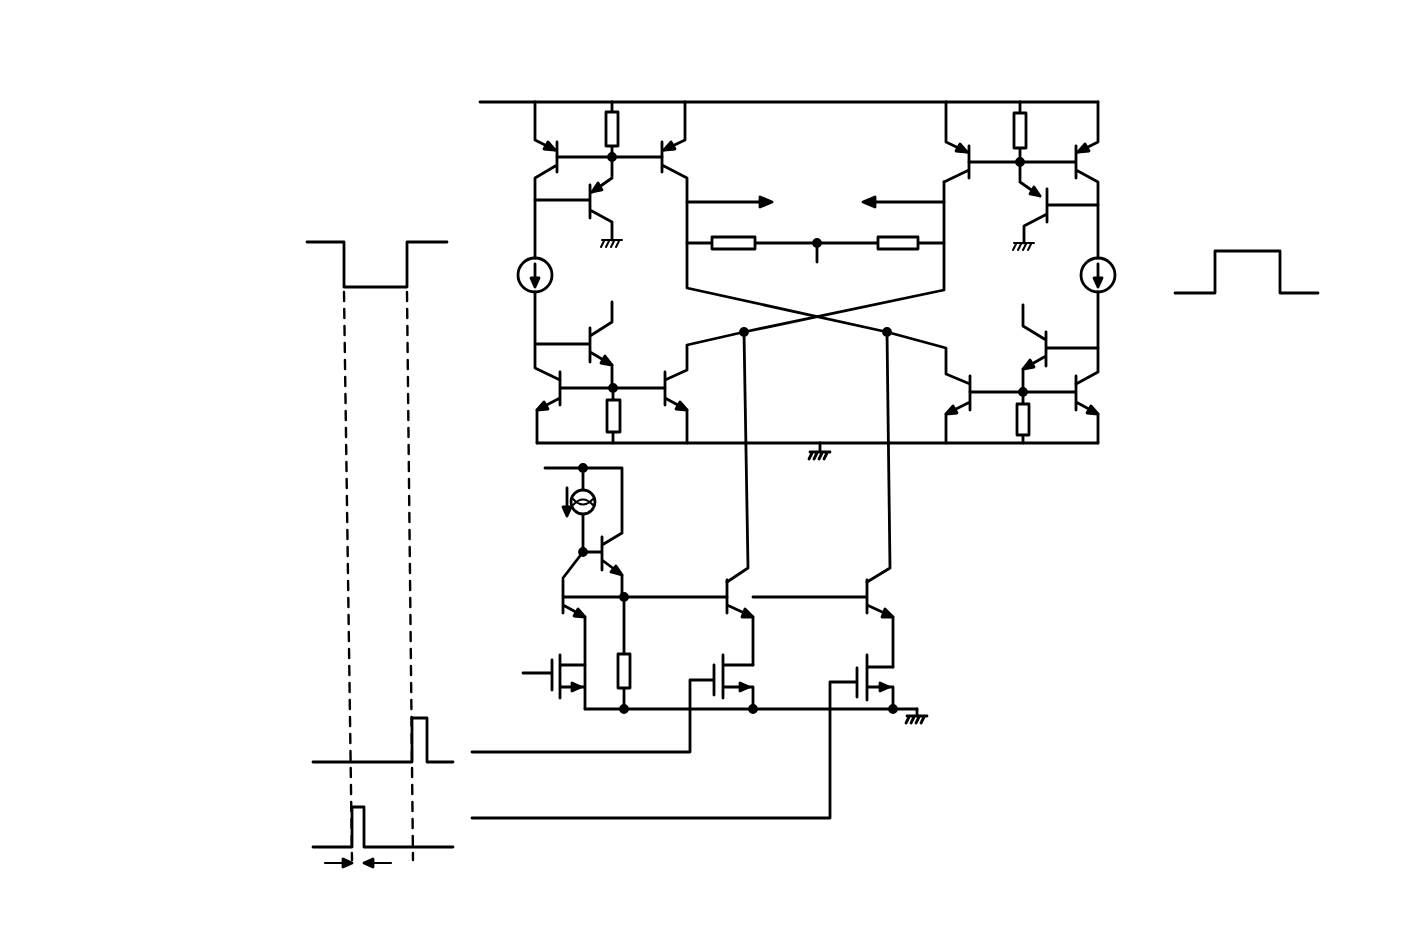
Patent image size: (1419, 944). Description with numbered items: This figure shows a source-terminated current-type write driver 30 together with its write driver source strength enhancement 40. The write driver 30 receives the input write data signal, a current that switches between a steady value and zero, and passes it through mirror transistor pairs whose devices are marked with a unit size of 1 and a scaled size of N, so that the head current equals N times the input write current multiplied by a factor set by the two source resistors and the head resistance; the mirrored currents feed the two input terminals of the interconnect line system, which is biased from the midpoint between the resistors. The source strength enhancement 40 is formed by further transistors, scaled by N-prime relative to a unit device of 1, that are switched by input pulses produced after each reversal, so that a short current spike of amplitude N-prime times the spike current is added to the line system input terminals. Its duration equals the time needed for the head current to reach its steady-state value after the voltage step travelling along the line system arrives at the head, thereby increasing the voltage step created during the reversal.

The source-terminated current-type write driver 30 is at (1132, 558).
The write driver source strength enhancement 40 is at (903, 635).
The unit-size transistor 1 is at (531, 180).